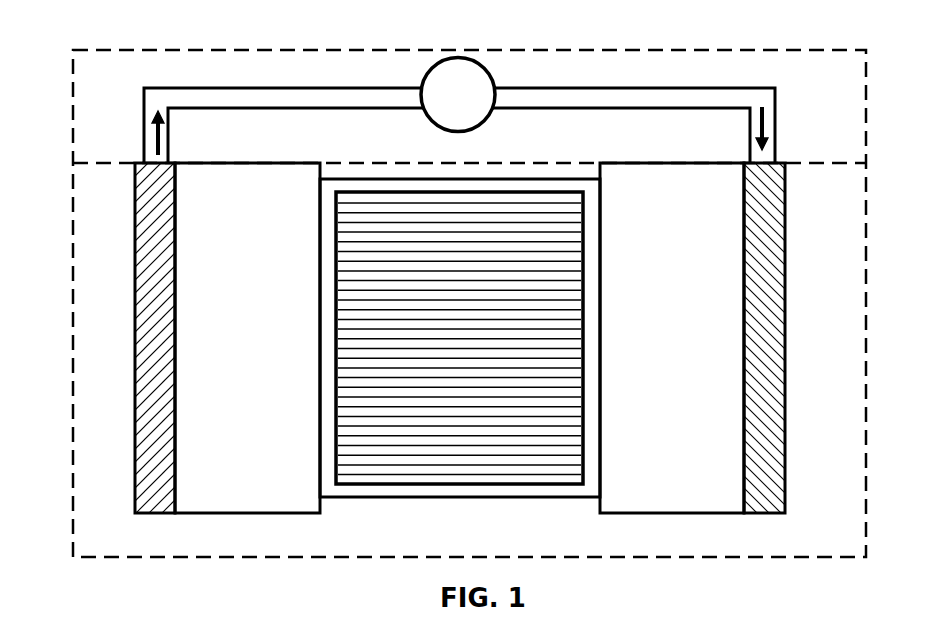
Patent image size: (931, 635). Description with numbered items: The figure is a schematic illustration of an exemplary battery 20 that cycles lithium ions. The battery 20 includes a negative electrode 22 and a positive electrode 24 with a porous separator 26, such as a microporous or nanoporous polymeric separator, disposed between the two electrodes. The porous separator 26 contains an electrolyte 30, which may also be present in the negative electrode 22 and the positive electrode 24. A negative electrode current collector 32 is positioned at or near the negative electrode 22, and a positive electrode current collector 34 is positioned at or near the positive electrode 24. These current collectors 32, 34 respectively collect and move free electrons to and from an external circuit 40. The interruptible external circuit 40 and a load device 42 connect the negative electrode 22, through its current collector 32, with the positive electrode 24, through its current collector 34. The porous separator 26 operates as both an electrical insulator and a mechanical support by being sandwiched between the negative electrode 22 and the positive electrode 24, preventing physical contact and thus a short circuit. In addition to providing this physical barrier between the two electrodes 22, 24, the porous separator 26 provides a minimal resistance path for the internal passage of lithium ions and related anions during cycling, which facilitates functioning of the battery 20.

The battery 20 is at (72, 209).
The negative electrode 22 is at (247, 338).
The positive electrode 24 is at (672, 338).
The porous separator 26 is at (457, 498).
The electrolyte 30 is at (459, 338).
The negative electrode current collector 32 is at (134, 240).
The positive electrode current collector 34 is at (786, 235).
The external circuit 40 is at (294, 50).
The load device 42 is at (459, 111).